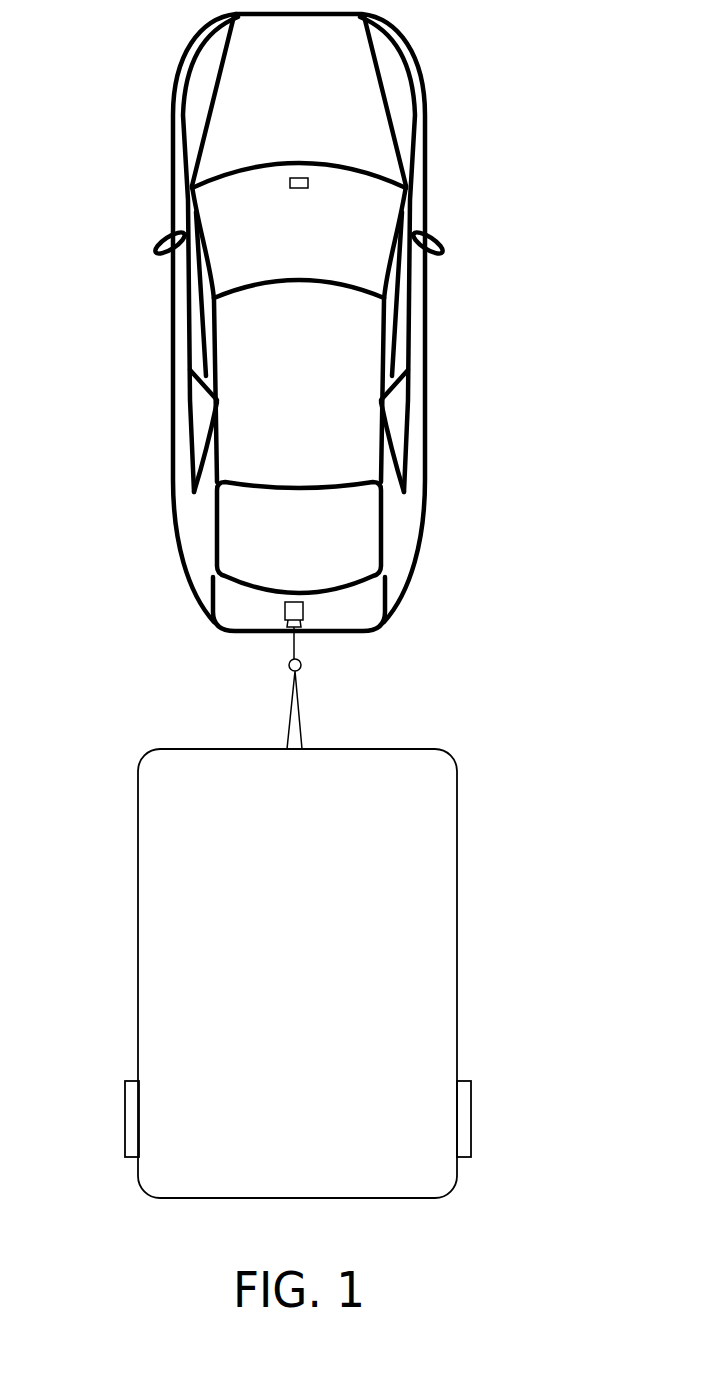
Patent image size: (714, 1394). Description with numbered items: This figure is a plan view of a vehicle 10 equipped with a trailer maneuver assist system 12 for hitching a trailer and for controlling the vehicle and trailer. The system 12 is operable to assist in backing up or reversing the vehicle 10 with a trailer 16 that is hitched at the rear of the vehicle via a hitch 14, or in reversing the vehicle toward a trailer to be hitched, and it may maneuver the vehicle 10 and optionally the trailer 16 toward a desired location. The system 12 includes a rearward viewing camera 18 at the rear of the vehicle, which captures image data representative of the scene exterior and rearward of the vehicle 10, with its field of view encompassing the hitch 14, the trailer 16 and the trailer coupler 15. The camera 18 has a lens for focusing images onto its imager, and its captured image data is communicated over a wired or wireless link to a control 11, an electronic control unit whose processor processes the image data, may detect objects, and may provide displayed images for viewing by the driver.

The vehicle 10 is at (437, 101).
The control 11 is at (308, 182).
The trailer maneuver assist system 12 is at (213, 463).
The hitch 14 is at (297, 645).
The trailer coupler 15 is at (290, 668).
The trailer 16 is at (162, 777).
The rearward viewing camera 18 is at (303, 612).